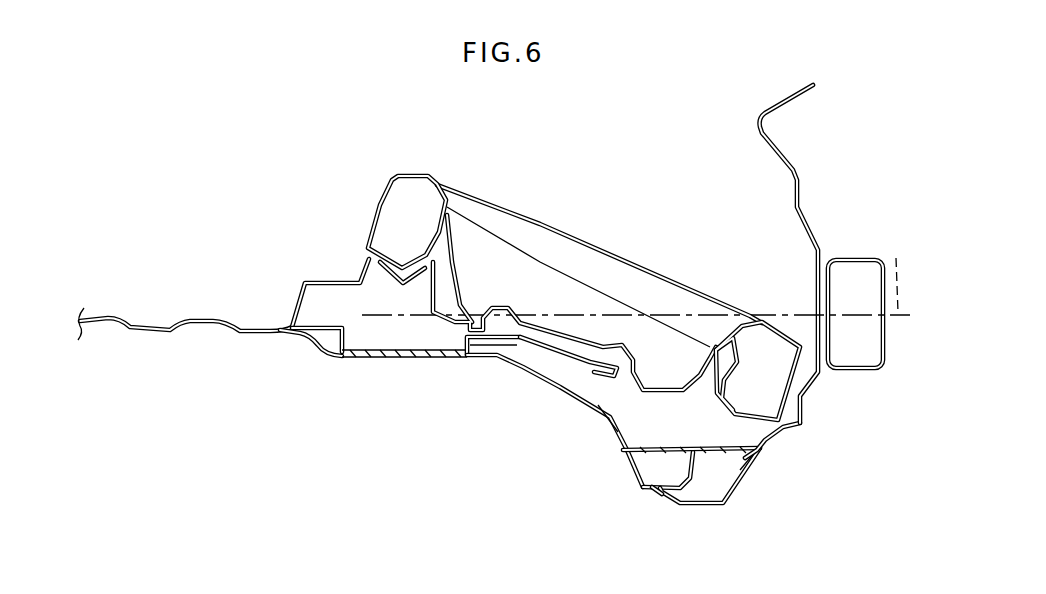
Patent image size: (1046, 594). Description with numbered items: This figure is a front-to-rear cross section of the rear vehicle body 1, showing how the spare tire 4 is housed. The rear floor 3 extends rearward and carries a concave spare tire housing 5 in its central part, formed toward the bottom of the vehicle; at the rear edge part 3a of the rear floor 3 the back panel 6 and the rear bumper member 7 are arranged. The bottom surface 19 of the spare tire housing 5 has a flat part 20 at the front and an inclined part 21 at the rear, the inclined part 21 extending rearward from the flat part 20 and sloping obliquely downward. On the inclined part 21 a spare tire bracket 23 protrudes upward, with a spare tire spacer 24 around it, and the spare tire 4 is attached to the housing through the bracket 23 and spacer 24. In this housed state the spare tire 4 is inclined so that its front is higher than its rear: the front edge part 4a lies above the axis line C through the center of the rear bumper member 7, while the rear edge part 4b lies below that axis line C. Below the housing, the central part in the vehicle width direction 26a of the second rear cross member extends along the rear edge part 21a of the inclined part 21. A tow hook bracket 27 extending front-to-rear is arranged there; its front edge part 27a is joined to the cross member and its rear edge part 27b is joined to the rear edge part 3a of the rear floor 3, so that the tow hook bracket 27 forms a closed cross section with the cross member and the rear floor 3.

The rear vehicle body 1 is at (287, 205).
The rear floor 3 is at (198, 325).
The rear edge part 3a is at (780, 430).
The spare tire 4 is at (481, 197).
The front edge part 4a is at (380, 205).
The rear edge part 4b is at (793, 380).
The spare tire housing 5 is at (414, 362).
The back panel 6 is at (790, 153).
The rear bumper member 7 is at (850, 258).
The bottom surface 19 is at (470, 358).
The flat part 20 is at (367, 358).
The inclined part 21 is at (515, 365).
The rear edge part 21a is at (613, 427).
The spare tire bracket 23 is at (548, 372).
The spare tire spacer 24 is at (327, 283).
The central part in the vehicle width direction 26a is at (630, 468).
The tow hook bracket 27 is at (740, 493).
The front edge part 27a is at (665, 493).
The rear edge part 27b is at (757, 453).
The axis line C is at (893, 269).